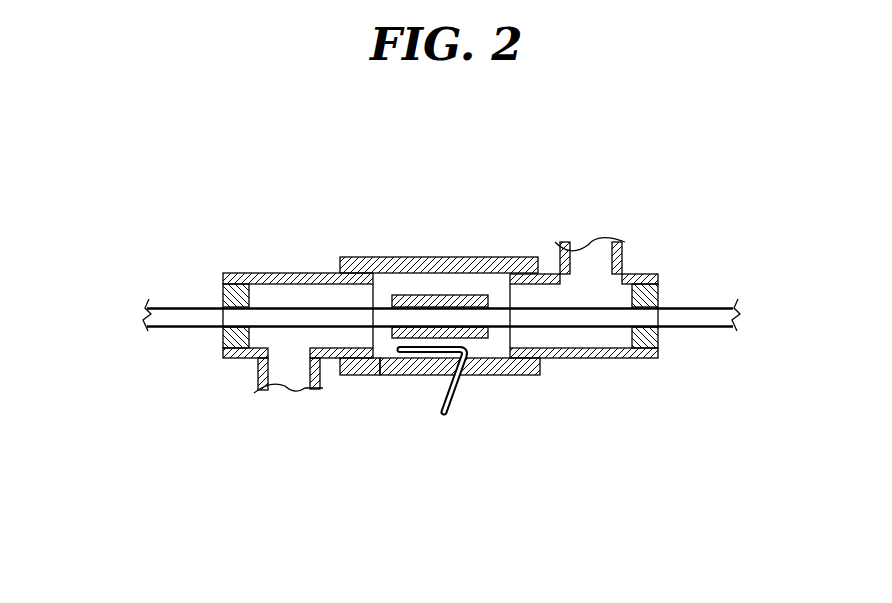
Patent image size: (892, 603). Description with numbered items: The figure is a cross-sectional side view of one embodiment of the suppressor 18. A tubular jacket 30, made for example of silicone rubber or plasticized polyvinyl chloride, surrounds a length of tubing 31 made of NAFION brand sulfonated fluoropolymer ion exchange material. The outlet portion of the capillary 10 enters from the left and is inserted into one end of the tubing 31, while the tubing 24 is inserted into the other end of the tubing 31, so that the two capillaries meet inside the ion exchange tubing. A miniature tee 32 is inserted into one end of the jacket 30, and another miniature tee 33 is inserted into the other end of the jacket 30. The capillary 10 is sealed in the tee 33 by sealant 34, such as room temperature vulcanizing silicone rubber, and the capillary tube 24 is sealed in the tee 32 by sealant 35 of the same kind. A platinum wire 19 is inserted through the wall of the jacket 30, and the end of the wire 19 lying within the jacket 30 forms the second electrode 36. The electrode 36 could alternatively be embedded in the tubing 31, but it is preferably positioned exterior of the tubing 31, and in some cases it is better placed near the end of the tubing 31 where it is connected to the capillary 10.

The capillary 10 is at (188, 328).
The suppressor 18 is at (415, 473).
The platinum wire 19 is at (457, 390).
The tubing 24 is at (705, 328).
The tubular jacket 30 is at (540, 374).
The tubing 31 is at (462, 296).
The miniature tee 32 is at (643, 360).
The miniature tee 33 is at (275, 272).
The sealant 34 is at (222, 295).
The sealant 35 is at (658, 296).
The second electrode 36 is at (377, 377).